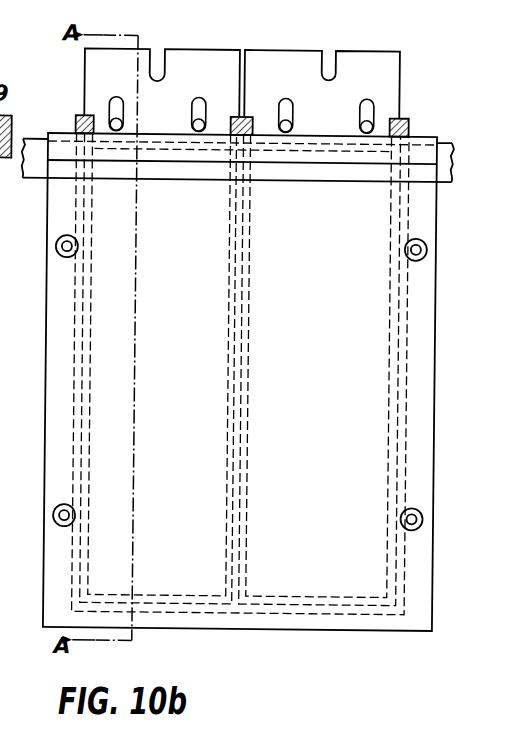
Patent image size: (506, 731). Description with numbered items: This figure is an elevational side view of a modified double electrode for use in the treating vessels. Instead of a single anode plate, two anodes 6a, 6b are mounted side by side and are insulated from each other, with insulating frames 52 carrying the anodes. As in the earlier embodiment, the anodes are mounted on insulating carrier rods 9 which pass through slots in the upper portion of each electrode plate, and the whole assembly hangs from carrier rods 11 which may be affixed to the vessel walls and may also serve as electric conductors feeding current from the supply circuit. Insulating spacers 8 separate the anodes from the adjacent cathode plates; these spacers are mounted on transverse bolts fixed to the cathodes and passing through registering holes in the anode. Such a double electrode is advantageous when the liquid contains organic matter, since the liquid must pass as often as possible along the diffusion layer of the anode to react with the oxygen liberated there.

The anode 6a is at (94, 74).
The anode 6b is at (372, 84).
The insulating carrier rod 9 is at (112, 126).
The insulating frame 52 is at (74, 122).
The carrier rod 11 is at (31, 164).
The insulating spacer 8 is at (54, 248).